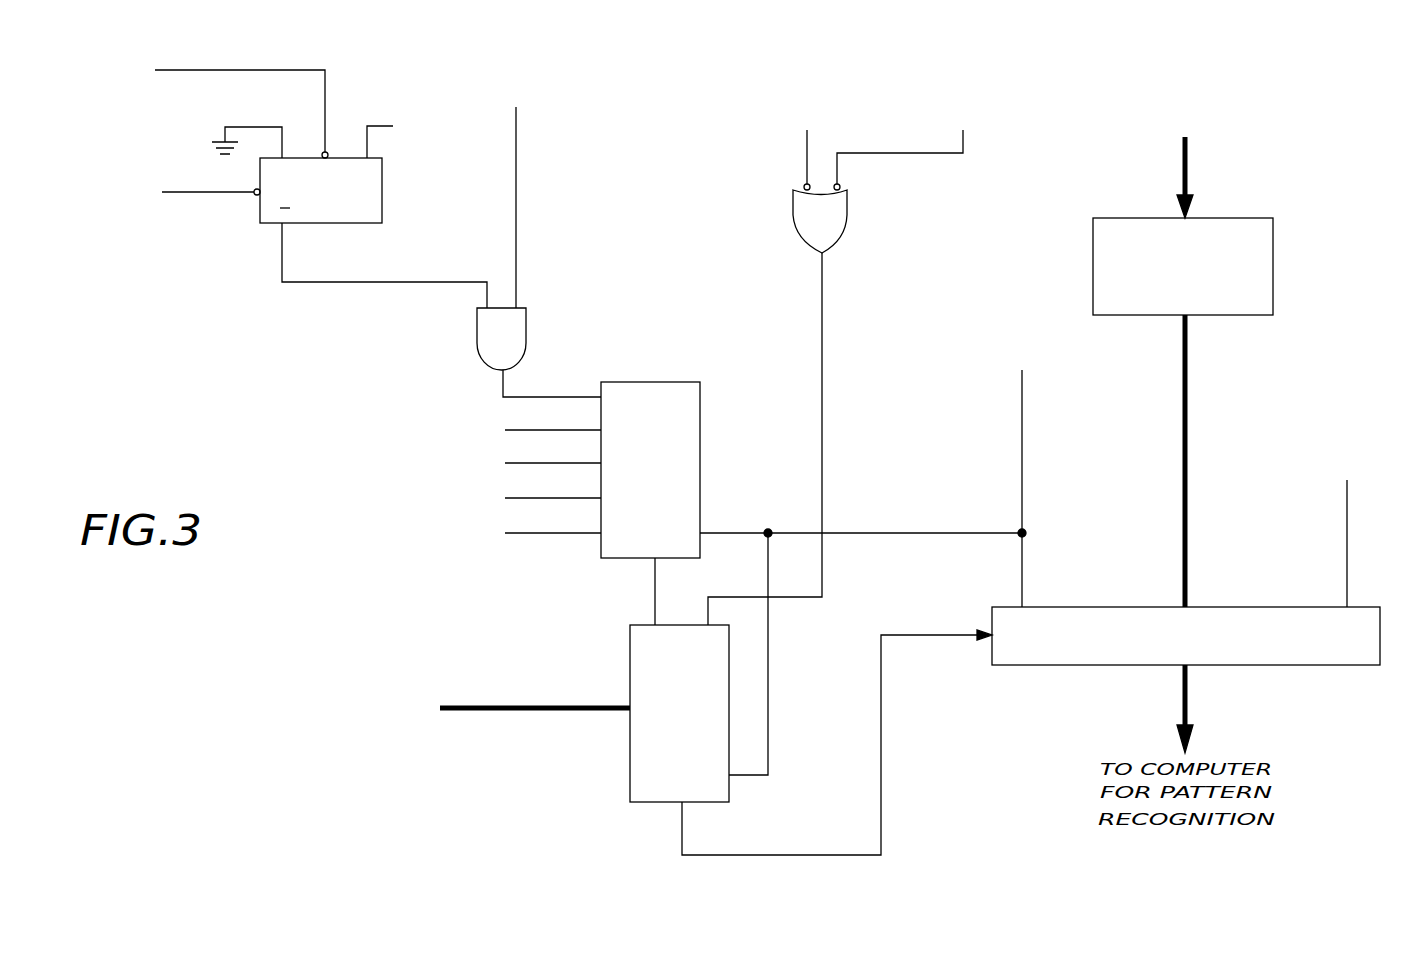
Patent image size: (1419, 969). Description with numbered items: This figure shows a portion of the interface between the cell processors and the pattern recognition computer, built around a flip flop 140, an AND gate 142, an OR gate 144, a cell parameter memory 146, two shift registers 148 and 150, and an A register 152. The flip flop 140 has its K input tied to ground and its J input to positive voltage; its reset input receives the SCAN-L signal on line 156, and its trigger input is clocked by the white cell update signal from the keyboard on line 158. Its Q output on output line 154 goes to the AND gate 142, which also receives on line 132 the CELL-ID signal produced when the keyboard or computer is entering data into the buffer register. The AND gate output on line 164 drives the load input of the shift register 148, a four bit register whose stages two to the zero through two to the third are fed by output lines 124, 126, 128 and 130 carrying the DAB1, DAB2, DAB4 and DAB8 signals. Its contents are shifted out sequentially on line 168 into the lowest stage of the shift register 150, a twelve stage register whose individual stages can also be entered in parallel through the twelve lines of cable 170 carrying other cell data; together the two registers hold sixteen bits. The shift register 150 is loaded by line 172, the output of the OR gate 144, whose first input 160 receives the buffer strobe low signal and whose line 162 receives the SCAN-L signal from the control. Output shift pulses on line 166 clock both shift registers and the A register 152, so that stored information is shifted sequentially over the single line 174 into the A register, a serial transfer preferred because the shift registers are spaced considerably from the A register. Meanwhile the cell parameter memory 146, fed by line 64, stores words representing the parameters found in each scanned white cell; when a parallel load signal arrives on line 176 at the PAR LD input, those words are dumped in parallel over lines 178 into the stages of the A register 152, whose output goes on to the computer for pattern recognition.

The line 158 is at (325, 92).
The flip flop 140 is at (382, 195).
The line 156 is at (217, 192).
The output line 154 is at (325, 282).
The line 132 is at (516, 155).
The AND gate 142 is at (526, 325).
The line 164 is at (563, 395).
The shift register 148 is at (668, 382).
The output line 124 is at (505, 430).
The output line 126 is at (505, 463).
The output line 128 is at (505, 498).
The output line 130 is at (505, 533).
The line 168 is at (650, 600).
The shift register 150 is at (637, 742).
The cable 170 is at (564, 704).
The line 172 is at (822, 415).
The OR gate 144 is at (843, 207).
The first input 160 is at (800, 156).
The line 162 is at (928, 153).
The line 64 is at (1190, 173).
The cell parameter memory 146 is at (1240, 315).
The lines 178 is at (1190, 488).
The line 166 is at (1022, 422).
The A register 152 is at (1360, 665).
The line 176 is at (1347, 563).
The line 174 is at (922, 635).